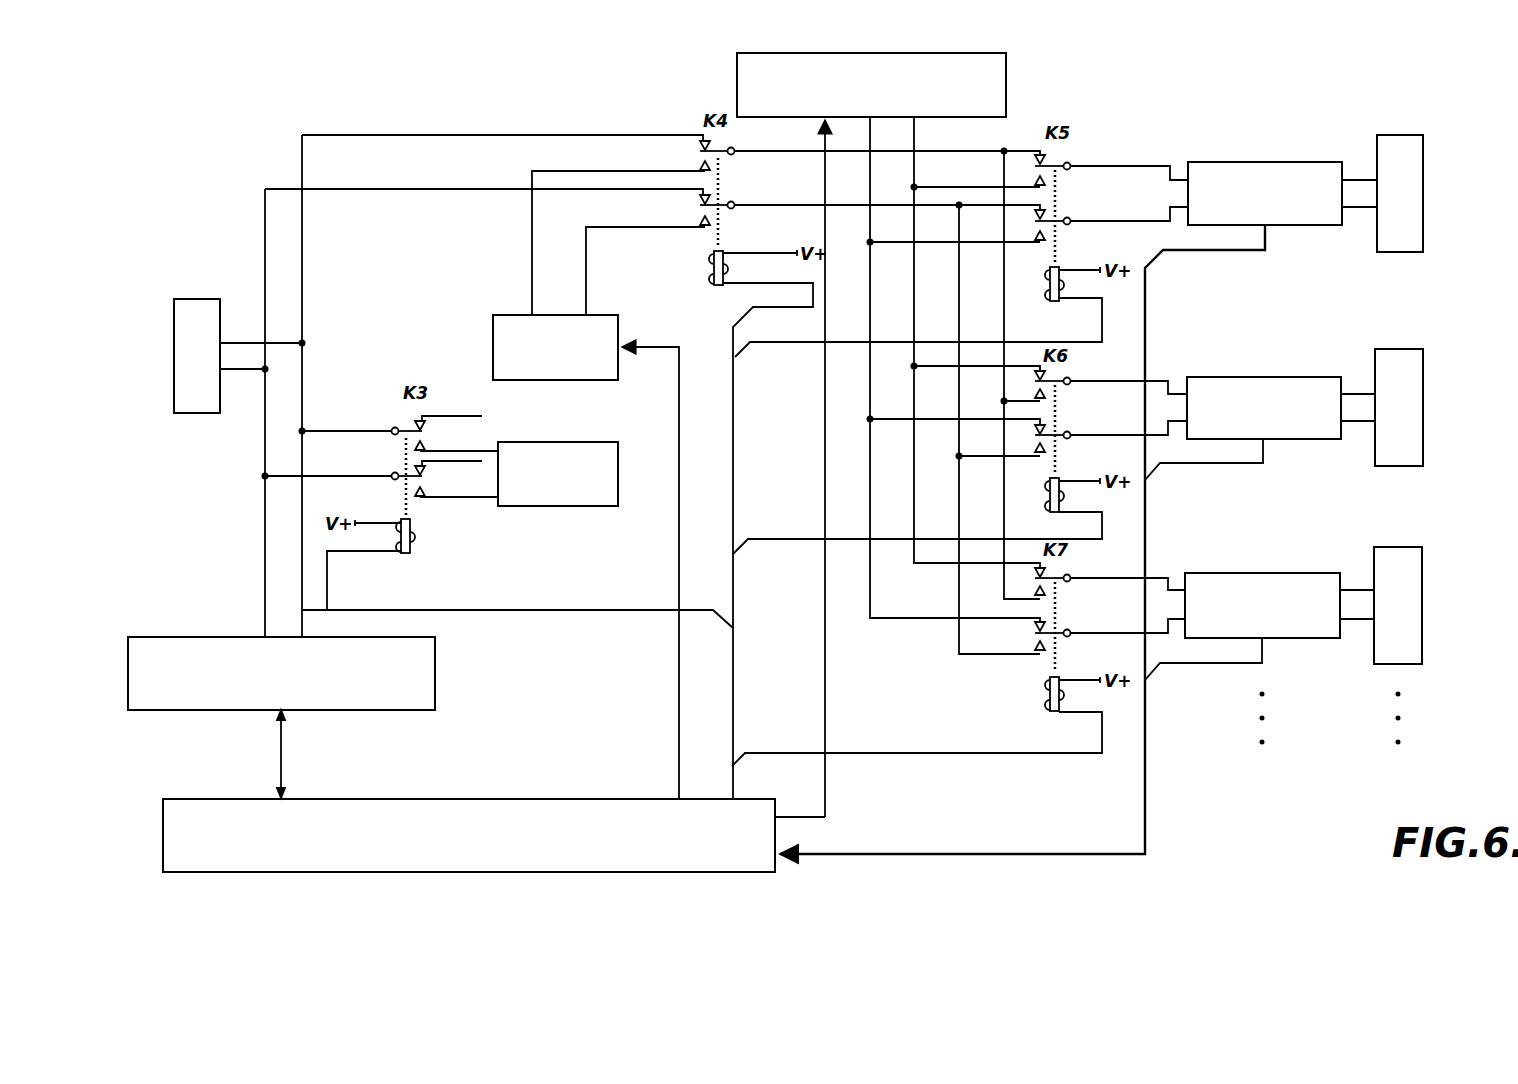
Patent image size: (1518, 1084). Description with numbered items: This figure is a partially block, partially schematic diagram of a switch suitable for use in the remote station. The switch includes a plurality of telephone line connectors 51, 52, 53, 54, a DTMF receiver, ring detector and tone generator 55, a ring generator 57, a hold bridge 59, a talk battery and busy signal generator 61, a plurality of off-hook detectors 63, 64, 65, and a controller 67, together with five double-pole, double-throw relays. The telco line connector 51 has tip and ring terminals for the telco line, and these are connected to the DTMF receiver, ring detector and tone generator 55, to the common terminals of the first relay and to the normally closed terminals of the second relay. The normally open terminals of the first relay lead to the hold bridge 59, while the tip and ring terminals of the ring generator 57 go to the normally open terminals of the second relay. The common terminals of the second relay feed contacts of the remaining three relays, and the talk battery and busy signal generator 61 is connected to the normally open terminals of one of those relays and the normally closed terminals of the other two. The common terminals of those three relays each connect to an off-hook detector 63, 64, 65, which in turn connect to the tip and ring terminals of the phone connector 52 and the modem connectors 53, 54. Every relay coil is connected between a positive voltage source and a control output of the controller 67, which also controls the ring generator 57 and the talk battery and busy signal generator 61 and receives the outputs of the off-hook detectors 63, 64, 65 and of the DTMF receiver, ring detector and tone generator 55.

The telephone line connector 51 is at (196, 299).
The phone connector 52 is at (1400, 135).
The modem connector 53 is at (1400, 349).
The modem connector 54 is at (1400, 547).
The DTMF receiver, ring detector and tone generator 55 is at (437, 673).
The ring generator 57 is at (620, 330).
The hold bridge 59 is at (620, 455).
The talk battery and busy signal generator 61 is at (1008, 80).
The off-hook detector 63 is at (1263, 162).
The off-hook detector 64 is at (1263, 377).
The off-hook detector 65 is at (1261, 573).
The controller 67 is at (777, 805).